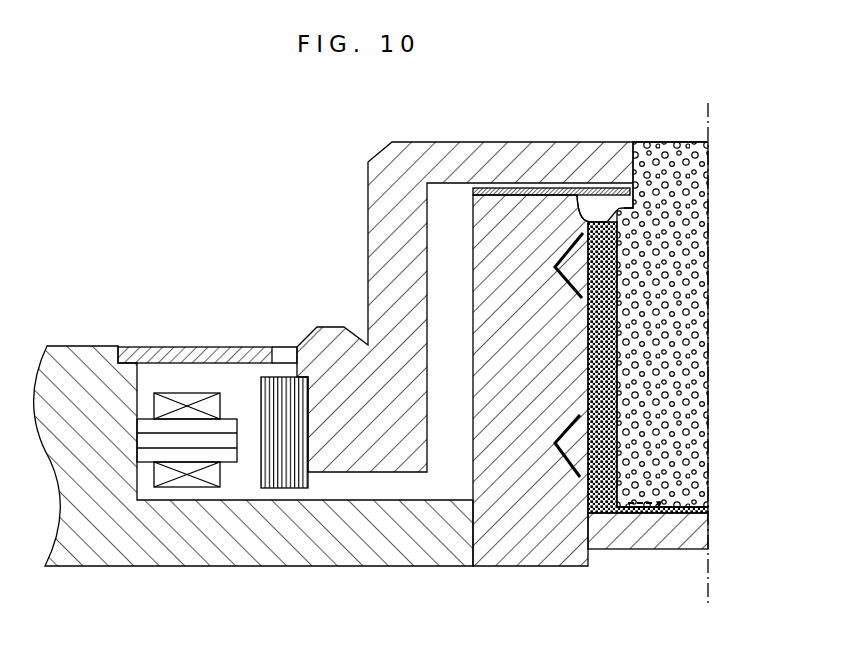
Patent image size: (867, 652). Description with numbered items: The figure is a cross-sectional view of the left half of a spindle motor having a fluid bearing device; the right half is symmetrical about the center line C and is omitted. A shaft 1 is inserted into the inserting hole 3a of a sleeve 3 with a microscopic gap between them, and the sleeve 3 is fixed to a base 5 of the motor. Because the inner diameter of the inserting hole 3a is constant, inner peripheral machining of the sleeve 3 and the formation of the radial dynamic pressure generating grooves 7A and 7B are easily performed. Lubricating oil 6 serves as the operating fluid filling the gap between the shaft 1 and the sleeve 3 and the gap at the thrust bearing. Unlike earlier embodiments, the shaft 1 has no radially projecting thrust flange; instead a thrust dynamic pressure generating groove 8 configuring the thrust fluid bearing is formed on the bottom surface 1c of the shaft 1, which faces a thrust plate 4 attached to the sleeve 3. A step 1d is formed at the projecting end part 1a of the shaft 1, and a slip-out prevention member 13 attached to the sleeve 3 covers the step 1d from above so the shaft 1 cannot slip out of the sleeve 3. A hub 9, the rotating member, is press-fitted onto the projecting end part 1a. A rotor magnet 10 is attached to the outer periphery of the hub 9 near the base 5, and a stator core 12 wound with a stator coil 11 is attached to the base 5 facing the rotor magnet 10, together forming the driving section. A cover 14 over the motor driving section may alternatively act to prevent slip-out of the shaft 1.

The shaft 1 is at (677, 328).
The projecting end part 1a is at (662, 165).
The bottom surface 1c is at (673, 509).
The step 1d is at (633, 200).
The sleeve 3 is at (518, 302).
The inserting hole 3a is at (580, 208).
The thrust plate 4 is at (705, 523).
The base 5 is at (240, 527).
The lubricating oil 6 is at (608, 220).
The radial dynamic pressure generating groove 7A is at (565, 270).
The radial dynamic pressure generating groove 7B is at (573, 450).
The thrust dynamic pressure generating groove 8 is at (630, 509).
The hub 9 is at (440, 163).
The rotor magnet 10 is at (282, 482).
The stator coil 11 is at (165, 473).
The stator core 12 is at (145, 453).
The slip-out prevention member 13 is at (510, 190).
The cover 14 is at (178, 347).
The center line C is at (712, 113).